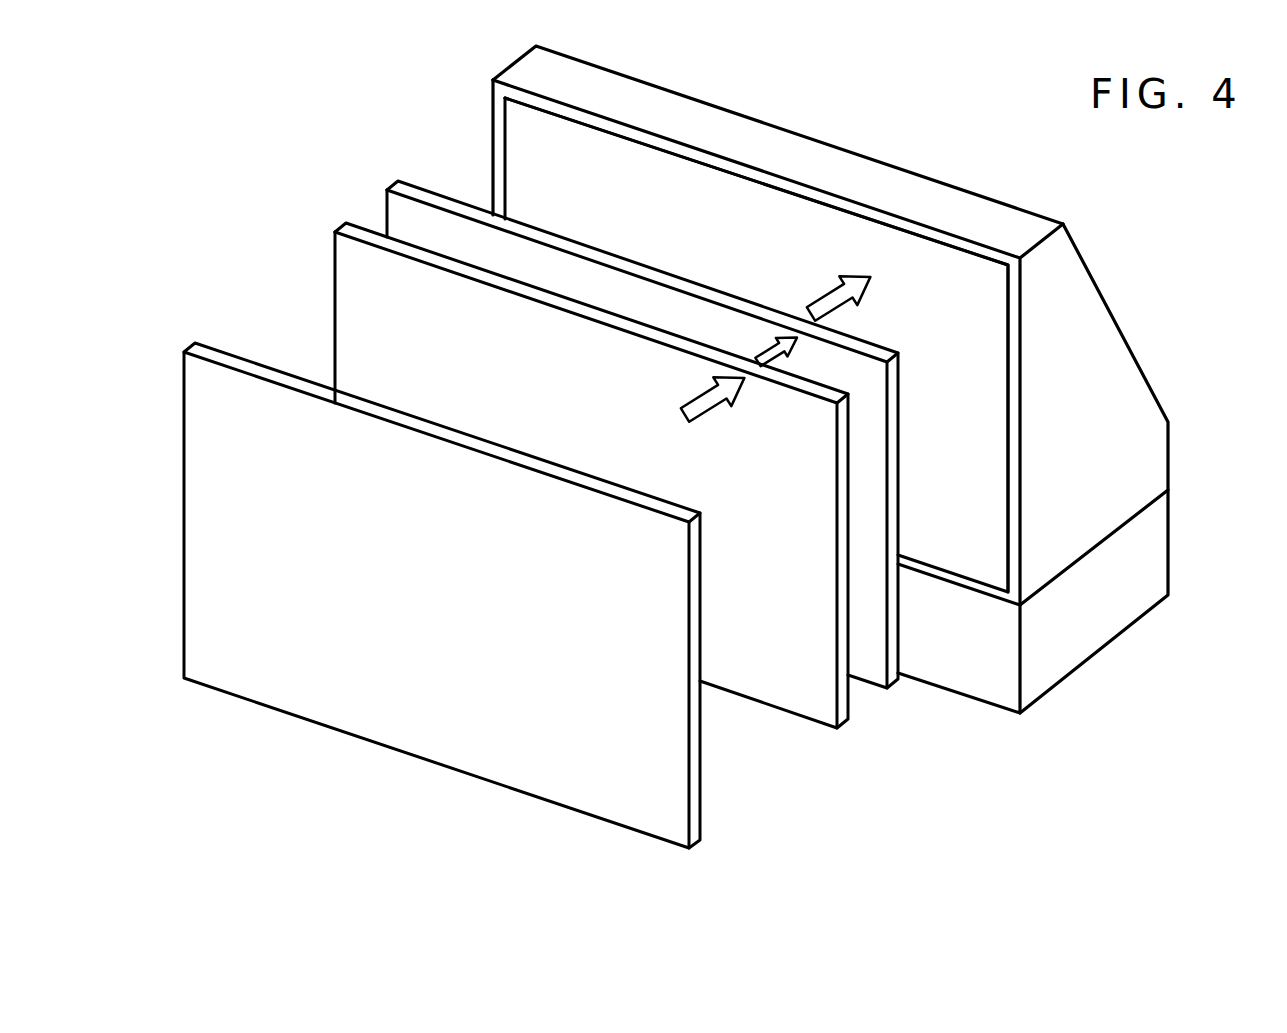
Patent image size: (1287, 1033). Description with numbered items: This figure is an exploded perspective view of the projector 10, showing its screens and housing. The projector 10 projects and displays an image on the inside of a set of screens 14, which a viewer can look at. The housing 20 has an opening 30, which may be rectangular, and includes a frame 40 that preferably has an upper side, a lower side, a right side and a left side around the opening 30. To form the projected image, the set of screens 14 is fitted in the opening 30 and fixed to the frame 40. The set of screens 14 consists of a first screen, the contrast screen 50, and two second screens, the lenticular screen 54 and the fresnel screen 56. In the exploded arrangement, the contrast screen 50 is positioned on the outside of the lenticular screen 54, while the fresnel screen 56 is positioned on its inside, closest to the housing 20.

The projector 10 is at (805, 106).
The set of screens 14 is at (400, 171).
The housing 20 is at (927, 195).
The opening 30 is at (967, 380).
The frame 40 is at (695, 115).
The contrast screen 50 is at (383, 720).
The lenticular screen 54 is at (802, 703).
The fresnel screen 56 is at (880, 677).